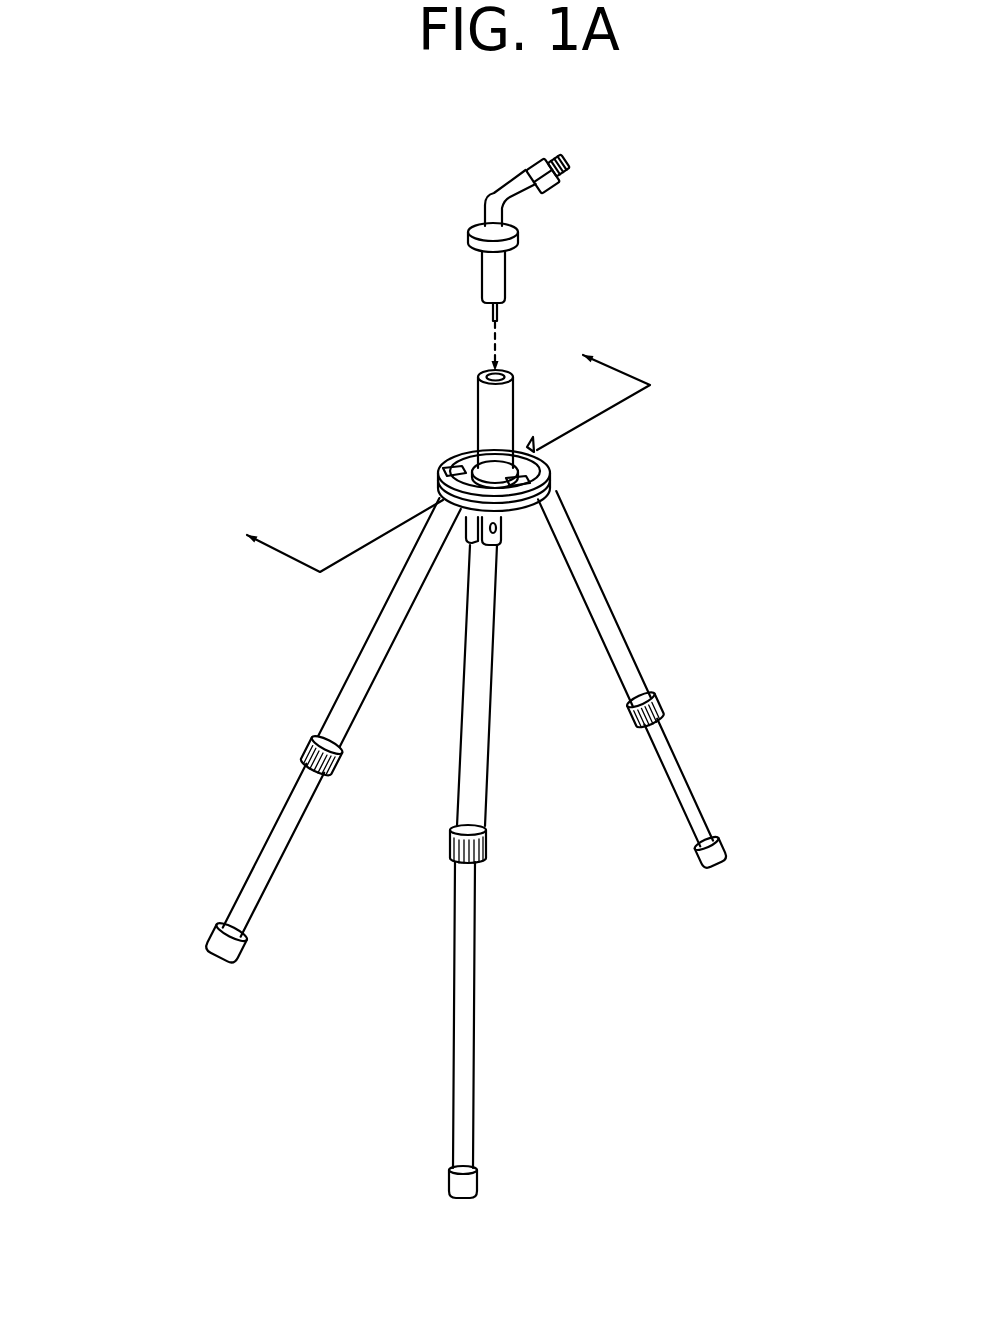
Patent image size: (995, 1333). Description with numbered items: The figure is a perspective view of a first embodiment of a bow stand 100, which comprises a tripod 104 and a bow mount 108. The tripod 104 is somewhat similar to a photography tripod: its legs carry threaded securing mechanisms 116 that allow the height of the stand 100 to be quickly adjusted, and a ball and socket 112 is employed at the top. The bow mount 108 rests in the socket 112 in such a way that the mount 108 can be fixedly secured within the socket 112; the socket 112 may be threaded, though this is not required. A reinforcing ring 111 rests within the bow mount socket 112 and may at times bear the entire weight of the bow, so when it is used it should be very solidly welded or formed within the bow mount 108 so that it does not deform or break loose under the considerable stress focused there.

The stand 100 is at (160, 1150).
The tripod 104 is at (476, 1040).
The bow mount 108 is at (467, 253).
The reinforcing ring 111 is at (529, 198).
The socket 112 is at (476, 418).
The threaded securing mechanisms 116 is at (657, 702).